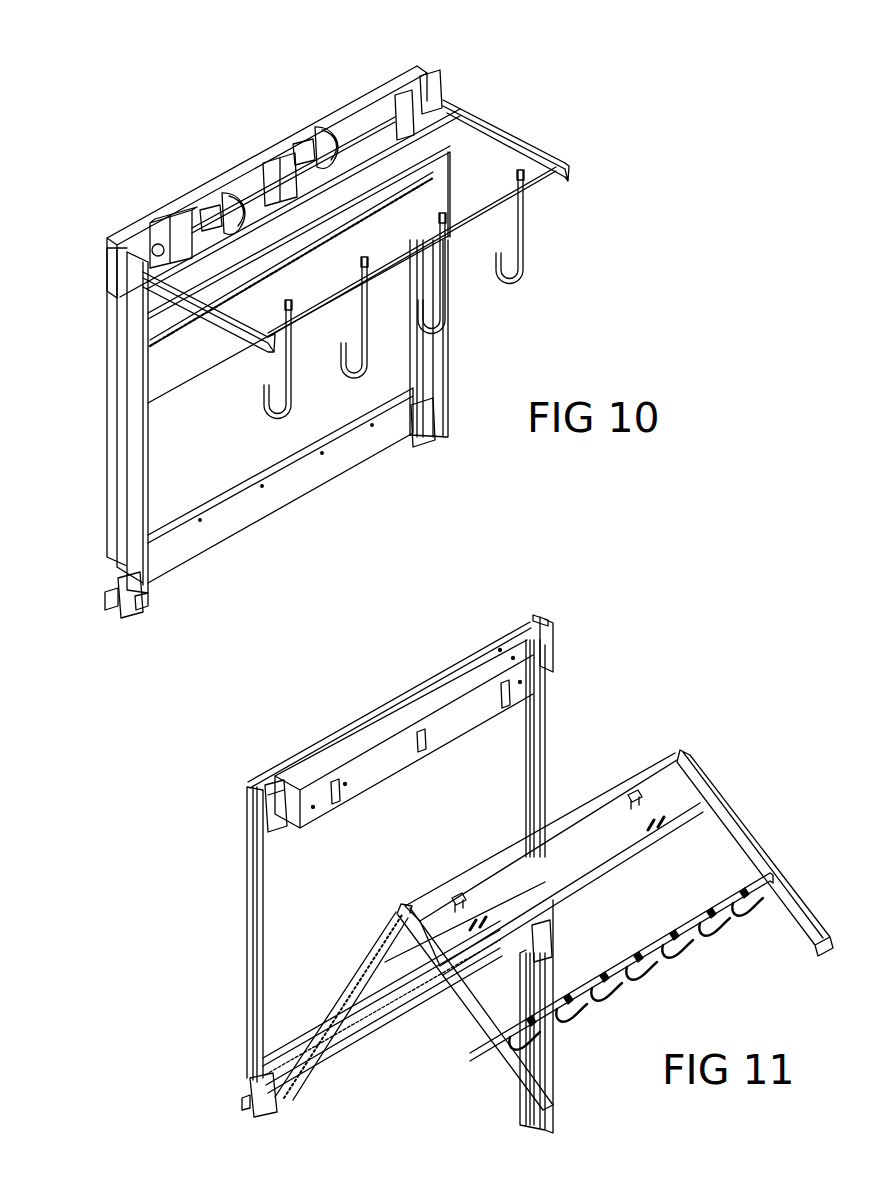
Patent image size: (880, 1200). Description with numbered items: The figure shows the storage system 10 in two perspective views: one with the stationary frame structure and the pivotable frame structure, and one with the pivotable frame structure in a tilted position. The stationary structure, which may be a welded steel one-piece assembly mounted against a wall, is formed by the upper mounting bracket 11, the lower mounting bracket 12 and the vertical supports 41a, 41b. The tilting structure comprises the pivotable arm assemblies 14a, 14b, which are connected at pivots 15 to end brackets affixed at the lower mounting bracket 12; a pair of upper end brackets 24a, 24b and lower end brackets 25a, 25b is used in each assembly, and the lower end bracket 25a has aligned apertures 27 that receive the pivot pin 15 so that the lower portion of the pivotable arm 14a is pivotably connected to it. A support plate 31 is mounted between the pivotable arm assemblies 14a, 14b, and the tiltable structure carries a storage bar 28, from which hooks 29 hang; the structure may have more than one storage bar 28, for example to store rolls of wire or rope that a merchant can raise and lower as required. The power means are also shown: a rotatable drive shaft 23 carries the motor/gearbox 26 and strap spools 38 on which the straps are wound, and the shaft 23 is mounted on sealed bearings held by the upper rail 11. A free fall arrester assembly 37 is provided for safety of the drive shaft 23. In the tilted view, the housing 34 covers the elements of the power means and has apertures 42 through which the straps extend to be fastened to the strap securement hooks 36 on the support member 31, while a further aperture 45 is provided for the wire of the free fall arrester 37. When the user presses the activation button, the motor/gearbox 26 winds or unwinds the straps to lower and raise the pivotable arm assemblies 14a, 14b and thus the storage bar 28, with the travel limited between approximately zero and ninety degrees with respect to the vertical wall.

In FIG. 10, the storage system 10 is at (489, 87).
In FIG. 11, the storage system 10 is at (602, 642).
In FIG. 10, the upper mounting bracket 11 is at (241, 329).
In FIG. 11, the upper mounting bracket 11 is at (372, 877).
In FIG. 10, the lower mounting bracket 12 is at (227, 547).
In FIG. 11, the lower mounting bracket 12 is at (330, 1057).
In FIG. 10, the pivotable arm assembly 14a is at (151, 301).
In FIG. 11, the pivotable arm assembly 14a is at (460, 1013).
In FIG. 10, the pivotable arm assembly 14b is at (525, 124).
In FIG. 11, the pivotable arm assembly 14b is at (764, 827).
In FIG. 10, the pivot pin 15 is at (117, 593).
In FIG. 10, the rotatable drive shaft 23 is at (290, 163).
In FIG. 11, the upper end bracket 24a is at (270, 813).
In FIG. 10, the upper end bracket 24b is at (118, 598).
In FIG. 11, the upper end bracket 24b is at (257, 1103).
In FIG. 11, the lower end bracket 25a is at (553, 642).
In FIG. 10, the lower end bracket 25b is at (437, 433).
In FIG. 11, the lower end bracket 25b is at (560, 941).
In FIG. 10, the motor/gearbox 26 is at (152, 233).
In FIG. 10, the aligned apertures 27 is at (140, 607).
In FIG. 10, the storage bar 28 is at (537, 183).
In FIG. 11, the storage bar 28 is at (685, 928).
In FIG. 10, the hook 29 is at (525, 275).
In FIG. 11, the hook 29 is at (652, 967).
In FIG. 11, the support plate 31 is at (687, 802).
In FIG. 11, the housing 34 is at (437, 702).
In FIG. 11, the strap securement hook 36 is at (462, 897).
In FIG. 10, the free fall arrester assembly 37 is at (262, 163).
In FIG. 10, the strap spool 38 is at (200, 195).
In FIG. 10, the vertical support 41a is at (107, 472).
In FIG. 11, the vertical support 41a is at (247, 913).
In FIG. 11, the vertical support 41b is at (542, 747).
In FIG. 11, the aperture 42 is at (503, 705).
In FIG. 11, the aperture 45 is at (423, 743).